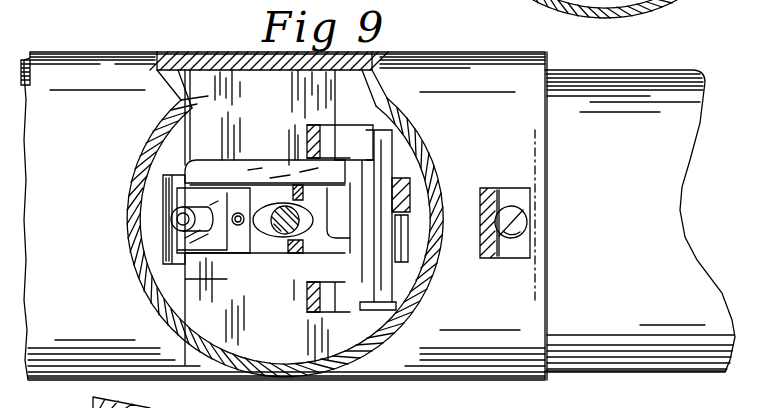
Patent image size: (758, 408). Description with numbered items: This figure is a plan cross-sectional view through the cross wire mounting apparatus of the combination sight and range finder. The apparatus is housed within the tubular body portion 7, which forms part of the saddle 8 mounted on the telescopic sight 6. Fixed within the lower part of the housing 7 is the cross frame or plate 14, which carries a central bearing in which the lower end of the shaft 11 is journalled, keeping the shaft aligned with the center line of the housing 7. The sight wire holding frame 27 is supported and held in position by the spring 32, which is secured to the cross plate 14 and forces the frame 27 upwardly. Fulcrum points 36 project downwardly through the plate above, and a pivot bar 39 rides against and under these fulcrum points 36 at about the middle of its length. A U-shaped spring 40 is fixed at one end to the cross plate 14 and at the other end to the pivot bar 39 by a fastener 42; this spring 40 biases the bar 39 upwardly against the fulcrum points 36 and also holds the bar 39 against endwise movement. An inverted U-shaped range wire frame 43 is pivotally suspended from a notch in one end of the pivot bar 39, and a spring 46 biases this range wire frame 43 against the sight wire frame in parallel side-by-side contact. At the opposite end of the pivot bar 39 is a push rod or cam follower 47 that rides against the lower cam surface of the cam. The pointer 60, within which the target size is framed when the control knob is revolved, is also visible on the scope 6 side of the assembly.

The telescopic sight 6 is at (654, 189).
The tubular body portion 7 is at (440, 276).
The saddle 8 is at (434, 71).
The shaft 11 is at (287, 218).
The cross frame or plate 14 is at (241, 103).
The sight wire holding frame 27 is at (331, 138).
The spring 32 is at (177, 260).
The fulcrum points 36 is at (293, 181).
The pivot bar 39 is at (221, 242).
The U-shaped spring 40 is at (247, 163).
The fastener 42 is at (238, 211).
The range wire frame 43 is at (385, 163).
The spring 46 is at (415, 203).
The push rod or cam follower 47 is at (181, 220).
The pointer 60 is at (498, 202).